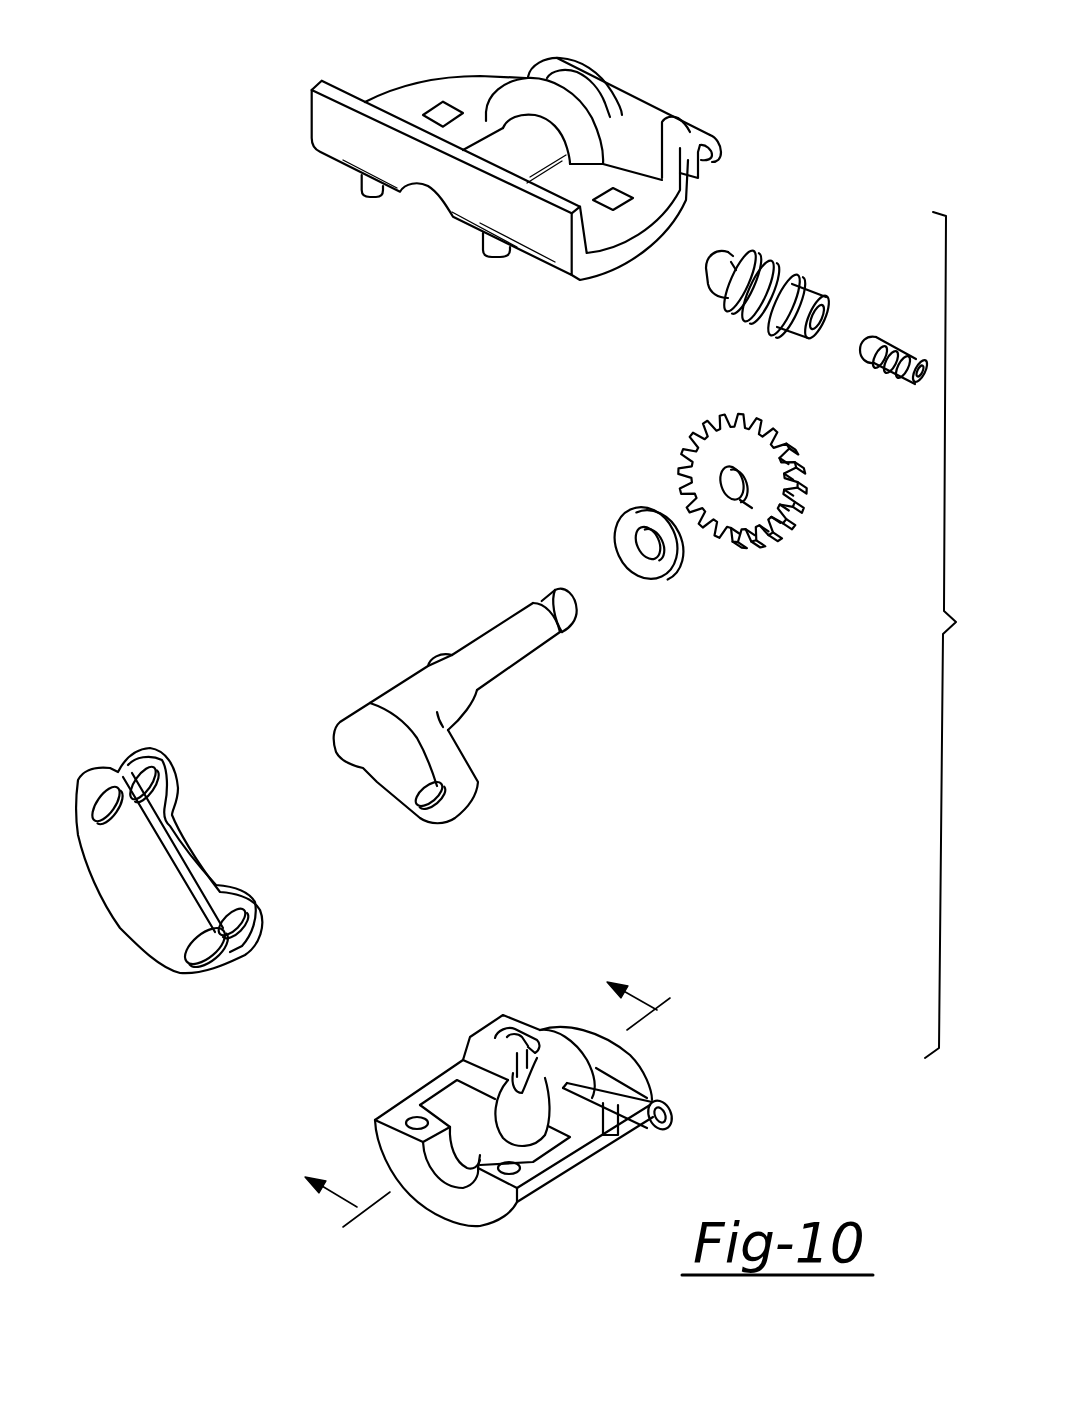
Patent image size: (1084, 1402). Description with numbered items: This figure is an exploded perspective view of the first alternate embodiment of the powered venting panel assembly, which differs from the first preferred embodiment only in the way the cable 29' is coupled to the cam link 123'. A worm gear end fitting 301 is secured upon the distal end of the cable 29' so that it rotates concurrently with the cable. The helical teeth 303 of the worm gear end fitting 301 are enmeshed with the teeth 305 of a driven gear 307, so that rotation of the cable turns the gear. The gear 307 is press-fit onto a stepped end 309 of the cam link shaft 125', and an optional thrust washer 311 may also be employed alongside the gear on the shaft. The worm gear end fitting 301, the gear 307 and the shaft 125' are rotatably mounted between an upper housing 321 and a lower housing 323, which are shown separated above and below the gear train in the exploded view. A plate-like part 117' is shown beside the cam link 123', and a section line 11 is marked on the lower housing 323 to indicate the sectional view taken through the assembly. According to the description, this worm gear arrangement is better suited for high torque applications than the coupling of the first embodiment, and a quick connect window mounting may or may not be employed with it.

The upper housing 321 is at (640, 117).
The worm gear end fitting 301 is at (750, 268).
The helical teeth 303 is at (722, 300).
The cable 29' is at (821, 361).
The teeth 305 is at (757, 431).
The driven gear 307 is at (753, 507).
The thrust washer 311 is at (632, 523).
The cam link 123' is at (406, 700).
The cam link shaft 125' is at (515, 659).
The stepped end 309 is at (567, 608).
The link plate 117' is at (180, 861).
The lower housing 323 is at (557, 1152).
The section line 11- 11 is at (511, 1111).